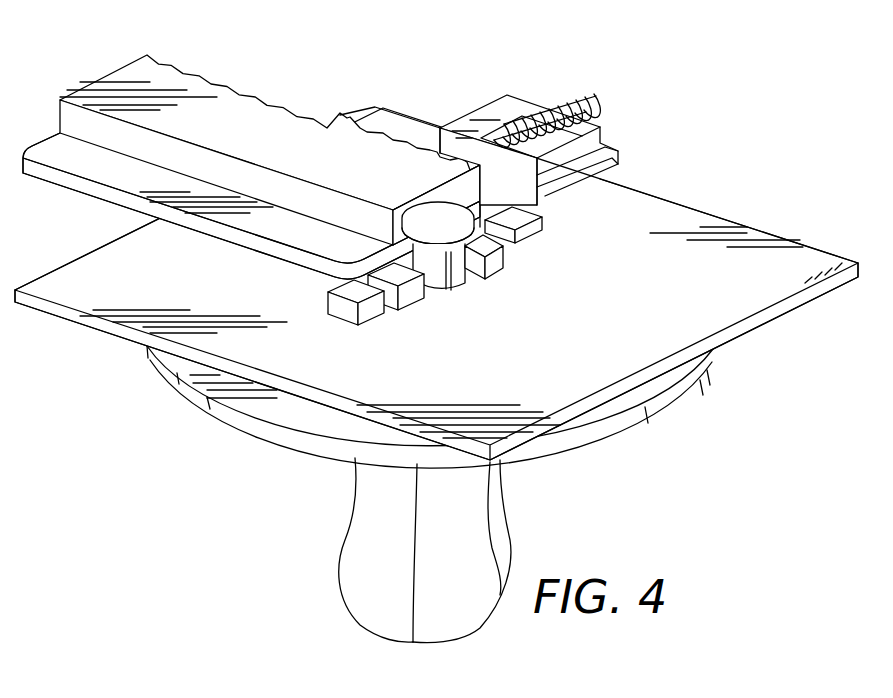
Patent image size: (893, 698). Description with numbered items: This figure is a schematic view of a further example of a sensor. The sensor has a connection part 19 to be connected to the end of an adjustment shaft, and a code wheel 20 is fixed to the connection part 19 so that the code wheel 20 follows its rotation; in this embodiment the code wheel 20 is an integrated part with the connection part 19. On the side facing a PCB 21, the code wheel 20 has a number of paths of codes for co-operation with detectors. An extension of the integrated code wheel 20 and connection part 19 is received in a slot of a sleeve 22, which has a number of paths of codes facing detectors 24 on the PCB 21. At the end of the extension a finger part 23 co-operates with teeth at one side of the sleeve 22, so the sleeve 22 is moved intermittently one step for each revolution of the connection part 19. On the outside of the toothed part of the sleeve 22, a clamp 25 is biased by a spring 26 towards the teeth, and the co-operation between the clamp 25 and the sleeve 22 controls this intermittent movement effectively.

The connection part 19 is at (477, 548).
The code wheel 20 is at (660, 410).
The PCB 21 is at (747, 303).
The sleeve 22 is at (247, 100).
The finger part 23 is at (517, 243).
The detectors 24 is at (343, 312).
The clamp 25 is at (507, 105).
The spring 26 is at (590, 100).